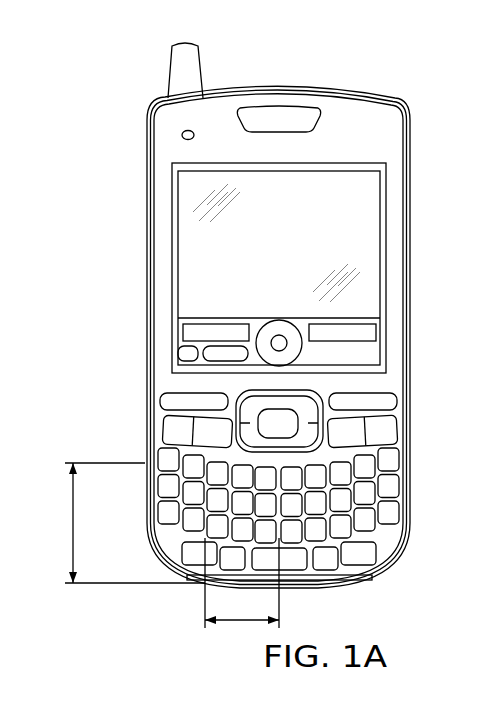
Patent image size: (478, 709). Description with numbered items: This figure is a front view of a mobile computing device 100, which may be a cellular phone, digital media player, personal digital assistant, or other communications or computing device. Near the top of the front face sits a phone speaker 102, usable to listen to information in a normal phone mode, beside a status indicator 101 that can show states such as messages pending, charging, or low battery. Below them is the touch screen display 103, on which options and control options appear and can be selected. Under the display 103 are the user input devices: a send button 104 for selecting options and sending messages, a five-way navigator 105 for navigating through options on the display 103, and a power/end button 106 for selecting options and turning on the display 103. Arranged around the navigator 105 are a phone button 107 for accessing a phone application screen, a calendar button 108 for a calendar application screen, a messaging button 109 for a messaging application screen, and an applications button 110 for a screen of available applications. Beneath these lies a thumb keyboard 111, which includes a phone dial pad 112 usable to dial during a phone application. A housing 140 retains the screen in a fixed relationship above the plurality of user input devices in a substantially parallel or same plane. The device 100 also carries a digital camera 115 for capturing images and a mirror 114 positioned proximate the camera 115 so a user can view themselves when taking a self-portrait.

The mobile computing device 100 is at (108, 313).
The status indicator 101 is at (177, 127).
The phone speaker 102 is at (278, 100).
The touch screen display 103 is at (272, 247).
The send button 104 is at (192, 390).
The 5-way navigator 105 is at (300, 408).
The power/end button 106 is at (367, 392).
The phone button 107 is at (155, 433).
The calendar button 108 is at (275, 508).
The messaging button 109 is at (341, 448).
The applications button 110 is at (398, 440).
The thumb keyboard 111 is at (67, 523).
The phone dial pad 112 is at (243, 627).
The mirror 114 is at (468, 214).
The digital camera 115 is at (466, 309).
The housing 140 is at (477, 585).